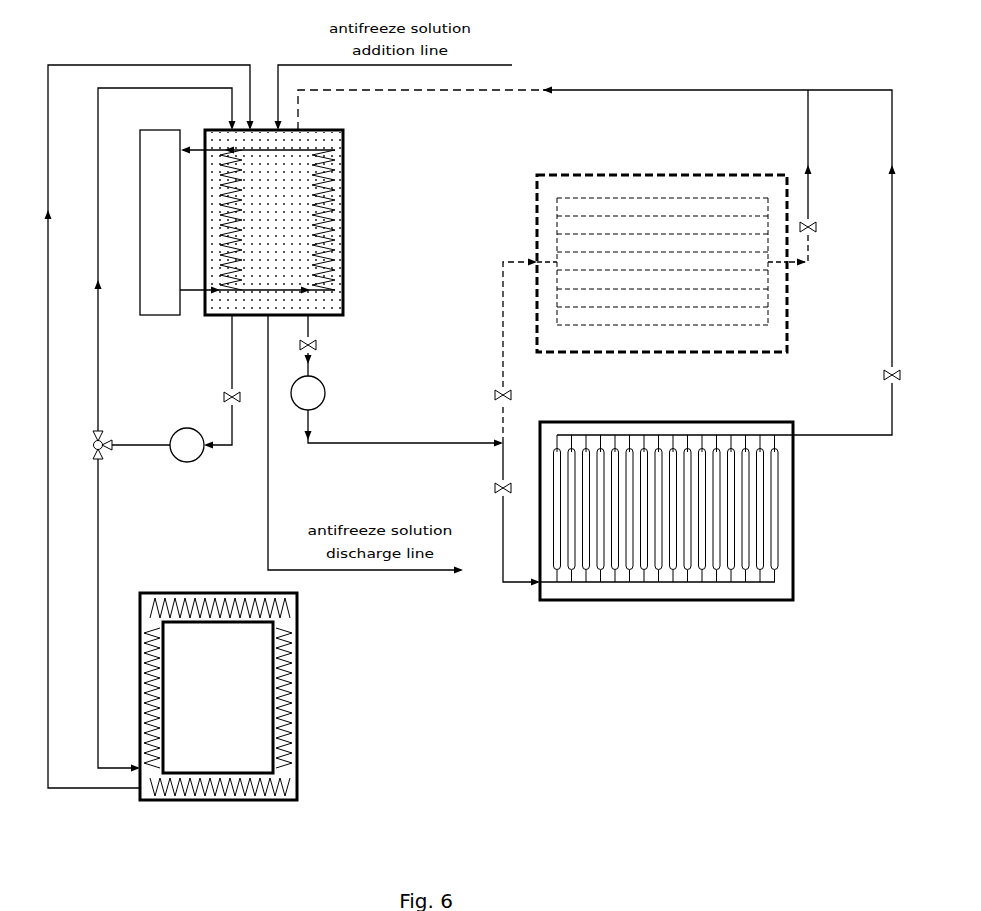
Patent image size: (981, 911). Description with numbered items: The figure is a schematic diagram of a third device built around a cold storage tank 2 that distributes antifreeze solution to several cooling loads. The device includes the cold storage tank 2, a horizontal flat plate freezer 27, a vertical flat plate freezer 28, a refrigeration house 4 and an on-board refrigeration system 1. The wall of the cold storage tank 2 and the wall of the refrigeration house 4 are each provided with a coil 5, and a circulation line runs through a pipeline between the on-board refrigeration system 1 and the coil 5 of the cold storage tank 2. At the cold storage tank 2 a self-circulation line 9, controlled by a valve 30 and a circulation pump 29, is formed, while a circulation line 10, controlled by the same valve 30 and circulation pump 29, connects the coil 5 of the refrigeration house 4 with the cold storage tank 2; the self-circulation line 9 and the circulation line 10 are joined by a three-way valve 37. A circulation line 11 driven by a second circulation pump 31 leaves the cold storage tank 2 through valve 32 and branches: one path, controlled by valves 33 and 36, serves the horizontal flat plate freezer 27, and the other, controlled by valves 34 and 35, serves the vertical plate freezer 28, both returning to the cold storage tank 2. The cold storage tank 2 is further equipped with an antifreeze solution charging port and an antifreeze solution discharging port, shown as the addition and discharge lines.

The on-board refrigeration system 1 is at (160, 222).
The cold storage tank 2 is at (261, 222).
The refrigeration house 4 is at (218, 696).
The coil 5 is at (346, 157).
The self-circulation line 9 is at (149, 426).
The circulation line 10 is at (154, 430).
The circulation line 11 is at (597, 217).
The horizontal plate freezer 27 is at (662, 251).
The vertical plate freezer 28 is at (716, 491).
The cycle pump 29 is at (187, 445).
The valve 30 is at (215, 397).
The cycle pump 31 is at (308, 393).
The valve 32 is at (322, 345).
The valve 33 is at (487, 395).
The valve 34 is at (487, 488).
The valve 35 is at (874, 375).
The valve 36 is at (824, 231).
The three-way valve 37 is at (90, 445).